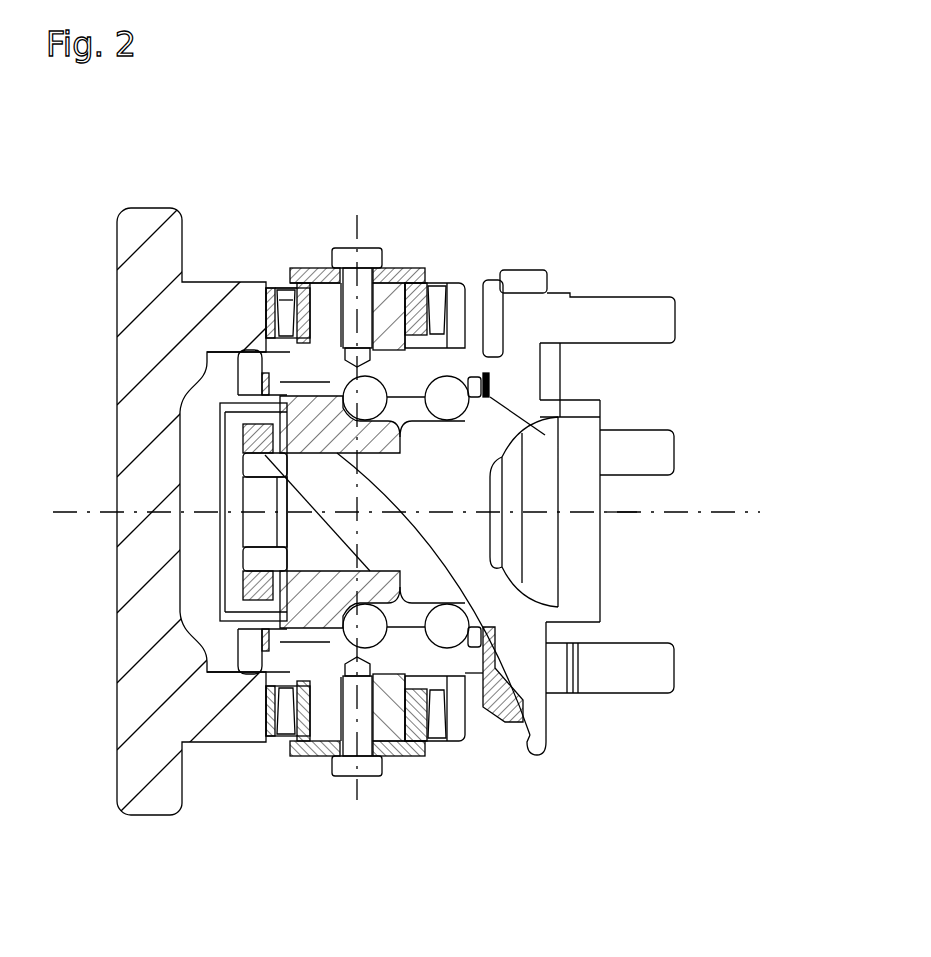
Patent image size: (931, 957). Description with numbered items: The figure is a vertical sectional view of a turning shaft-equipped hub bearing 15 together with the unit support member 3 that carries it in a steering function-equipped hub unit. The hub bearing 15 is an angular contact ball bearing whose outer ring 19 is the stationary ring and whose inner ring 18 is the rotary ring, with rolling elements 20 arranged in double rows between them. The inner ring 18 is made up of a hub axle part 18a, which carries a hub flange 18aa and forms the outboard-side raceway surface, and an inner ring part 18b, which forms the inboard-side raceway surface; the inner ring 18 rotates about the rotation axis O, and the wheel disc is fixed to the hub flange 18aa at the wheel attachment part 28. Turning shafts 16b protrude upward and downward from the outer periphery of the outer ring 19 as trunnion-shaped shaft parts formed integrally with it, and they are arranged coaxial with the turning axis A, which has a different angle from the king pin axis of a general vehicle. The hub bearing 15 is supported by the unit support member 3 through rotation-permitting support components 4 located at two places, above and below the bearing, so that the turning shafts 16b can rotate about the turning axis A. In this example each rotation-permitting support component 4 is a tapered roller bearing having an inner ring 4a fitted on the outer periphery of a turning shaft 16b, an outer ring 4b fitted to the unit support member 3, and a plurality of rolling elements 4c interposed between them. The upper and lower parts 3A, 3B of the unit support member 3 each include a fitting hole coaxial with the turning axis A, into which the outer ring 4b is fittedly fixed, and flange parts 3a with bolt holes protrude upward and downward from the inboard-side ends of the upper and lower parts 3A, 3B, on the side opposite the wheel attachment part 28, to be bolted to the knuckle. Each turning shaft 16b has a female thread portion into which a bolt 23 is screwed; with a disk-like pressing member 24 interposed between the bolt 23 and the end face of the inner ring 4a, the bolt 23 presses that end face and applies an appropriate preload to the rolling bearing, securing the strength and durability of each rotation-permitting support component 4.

The unit support member 3 is at (128, 372).
The upper part of the unit support member 3A is at (205, 303).
The lower part of the unit support member 3B is at (220, 727).
The flange part 3a is at (127, 793).
The rotation-permitting support component 4 is at (437, 297).
The inner ring 4a is at (300, 277).
The outer ring 4b is at (285, 297).
The rolling elements 4c is at (288, 285).
The turning shaft-equipped hub bearing 15 is at (708, 422).
The turning shaft 16b is at (390, 300).
The inner ring 18 is at (617, 553).
The hub axle part 18a is at (602, 504).
The hub flange 18aa is at (525, 282).
The inner ring part 18b is at (297, 593).
The outer ring 19 is at (258, 353).
The rolling elements 20 is at (373, 395).
The bolt 23 is at (358, 247).
The pressing member 24 is at (318, 277).
The wheel attachment part 28 is at (547, 720).
The rotation axis O is at (73, 511).
The turning axis A is at (358, 790).